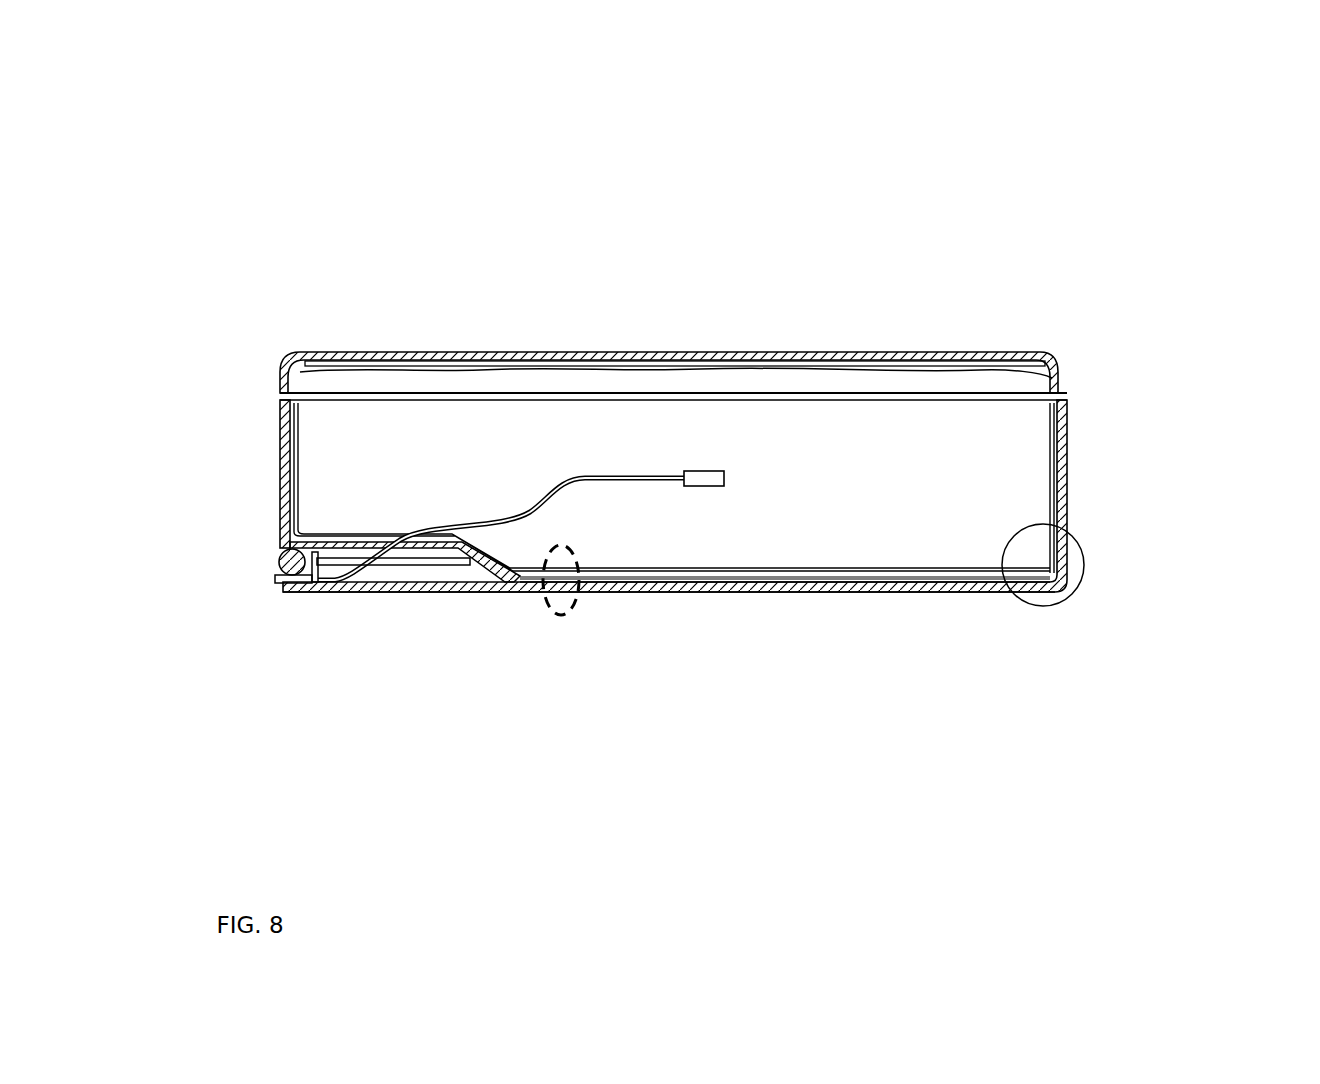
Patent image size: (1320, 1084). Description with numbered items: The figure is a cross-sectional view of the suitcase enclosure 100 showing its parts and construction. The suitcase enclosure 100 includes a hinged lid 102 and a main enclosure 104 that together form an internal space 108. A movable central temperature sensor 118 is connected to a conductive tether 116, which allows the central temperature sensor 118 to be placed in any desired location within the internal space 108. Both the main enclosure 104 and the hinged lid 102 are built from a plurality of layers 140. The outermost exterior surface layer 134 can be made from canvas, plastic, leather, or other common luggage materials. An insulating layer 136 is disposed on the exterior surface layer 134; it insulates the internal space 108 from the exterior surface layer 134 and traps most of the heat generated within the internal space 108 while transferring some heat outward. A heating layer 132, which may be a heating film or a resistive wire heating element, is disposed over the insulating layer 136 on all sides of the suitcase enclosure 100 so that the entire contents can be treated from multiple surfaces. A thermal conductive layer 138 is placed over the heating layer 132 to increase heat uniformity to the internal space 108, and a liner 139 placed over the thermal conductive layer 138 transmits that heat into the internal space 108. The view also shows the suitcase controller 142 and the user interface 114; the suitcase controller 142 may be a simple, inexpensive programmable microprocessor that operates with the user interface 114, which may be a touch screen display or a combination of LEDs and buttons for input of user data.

The suitcase enclosure 100 is at (403, 252).
The hinged lid 102 is at (948, 352).
The main enclosure 104 is at (1073, 447).
The internal space 108 is at (958, 478).
The user interface 114 is at (273, 578).
The conductive tether 116 is at (627, 475).
The central temperature sensor 118 is at (712, 467).
The heating layer 132 is at (782, 590).
The exterior surface layer 134 is at (637, 590).
The insulating layer 136 is at (713, 590).
The thermal conductive layer 138 is at (928, 590).
The liner 139 is at (680, 567).
The plurality of layers 140 is at (555, 623).
The suitcase controller 142 is at (313, 592).